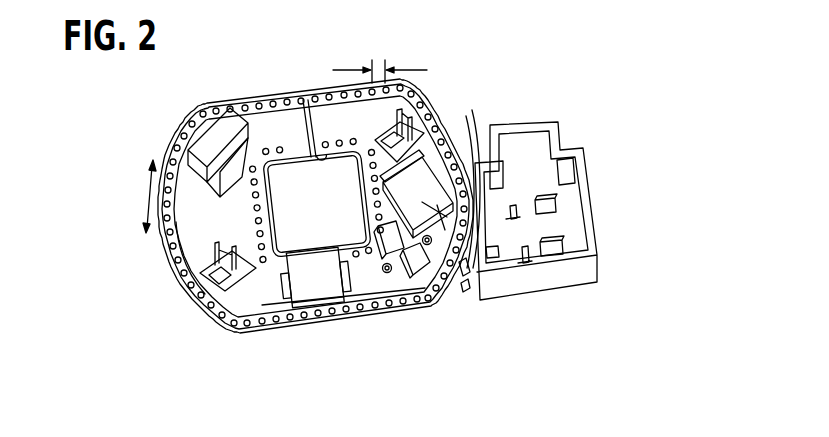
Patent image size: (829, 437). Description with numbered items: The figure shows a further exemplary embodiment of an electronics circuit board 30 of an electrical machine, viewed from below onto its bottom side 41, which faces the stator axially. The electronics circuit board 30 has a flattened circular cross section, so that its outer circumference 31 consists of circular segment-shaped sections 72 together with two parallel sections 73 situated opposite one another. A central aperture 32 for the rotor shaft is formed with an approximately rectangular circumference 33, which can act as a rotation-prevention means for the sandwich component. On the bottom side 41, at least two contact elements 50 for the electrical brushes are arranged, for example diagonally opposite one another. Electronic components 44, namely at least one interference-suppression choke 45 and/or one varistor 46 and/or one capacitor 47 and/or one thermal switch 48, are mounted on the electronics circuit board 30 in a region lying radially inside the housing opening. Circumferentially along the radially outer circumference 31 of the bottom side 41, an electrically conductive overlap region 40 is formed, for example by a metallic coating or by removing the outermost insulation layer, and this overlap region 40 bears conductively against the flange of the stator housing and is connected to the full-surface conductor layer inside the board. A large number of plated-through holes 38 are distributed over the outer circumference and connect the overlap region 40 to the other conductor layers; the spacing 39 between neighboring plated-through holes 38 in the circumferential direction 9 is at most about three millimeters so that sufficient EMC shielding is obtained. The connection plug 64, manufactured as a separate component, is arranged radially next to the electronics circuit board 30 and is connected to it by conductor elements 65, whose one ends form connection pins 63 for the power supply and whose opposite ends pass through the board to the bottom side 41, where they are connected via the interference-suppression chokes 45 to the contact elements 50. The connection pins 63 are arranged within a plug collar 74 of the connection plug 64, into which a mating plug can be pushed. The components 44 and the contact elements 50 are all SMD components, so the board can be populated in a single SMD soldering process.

The circumferential direction 9 is at (145, 200).
The electronics circuit board 30 is at (440, 118).
The outer circumference 31 is at (166, 148).
The central aperture 32 is at (197, 113).
The rectangular circumference 33 is at (298, 178).
The plated-through holes 38 is at (332, 82).
The spacing 39 is at (376, 58).
The overlap region 40 is at (257, 97).
The bottom side 41 is at (213, 233).
The electronic components 44 is at (336, 234).
The interference-suppression choke 45 is at (297, 280).
The varistor 46 is at (380, 258).
The capacitor 47 is at (422, 292).
The thermal switch 48 is at (297, 157).
The contact elements 50 is at (433, 103).
The connection pins 63 is at (567, 242).
The connection plug 64 is at (566, 188).
The conductor elements 65 is at (481, 176).
The circular segment-shaped sections 72 is at (182, 276).
The parallel sections 73 is at (288, 326).
The plug collar 74 is at (587, 192).